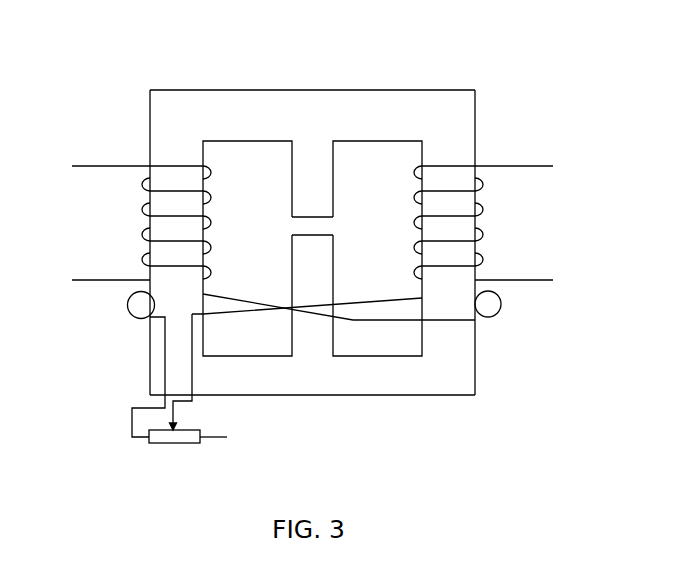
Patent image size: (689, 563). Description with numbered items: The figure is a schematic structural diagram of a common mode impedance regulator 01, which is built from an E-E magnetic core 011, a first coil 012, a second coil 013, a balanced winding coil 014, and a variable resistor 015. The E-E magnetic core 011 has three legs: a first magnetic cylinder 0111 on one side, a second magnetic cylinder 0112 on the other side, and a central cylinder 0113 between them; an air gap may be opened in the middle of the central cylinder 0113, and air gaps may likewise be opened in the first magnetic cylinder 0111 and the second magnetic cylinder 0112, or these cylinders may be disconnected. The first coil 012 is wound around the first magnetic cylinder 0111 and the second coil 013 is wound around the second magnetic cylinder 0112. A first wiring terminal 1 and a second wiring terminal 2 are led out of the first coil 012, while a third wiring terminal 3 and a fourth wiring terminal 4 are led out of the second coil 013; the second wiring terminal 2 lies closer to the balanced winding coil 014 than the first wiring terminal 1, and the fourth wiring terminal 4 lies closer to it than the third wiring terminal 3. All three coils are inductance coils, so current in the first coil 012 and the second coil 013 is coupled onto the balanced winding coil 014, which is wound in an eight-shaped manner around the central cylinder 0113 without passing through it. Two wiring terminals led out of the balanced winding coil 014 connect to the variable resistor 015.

The common mode impedance regulator 01 is at (320, 204).
The E-E magnetic core 011 is at (292, 191).
The first magnetic cylinder 0111 is at (180, 147).
The second magnetic cylinder 0112 is at (447, 147).
The central cylinder 0113 is at (306, 172).
The first coil 012 is at (178, 240).
The second coil 013 is at (455, 238).
The balanced winding coil 014 is at (390, 322).
The variable resistor 015 is at (168, 445).
The first wiring terminal 1 is at (111, 152).
The second wiring terminal 2 is at (111, 268).
The third wiring terminal 3 is at (514, 154).
The fourth wiring terminal 4 is at (514, 270).